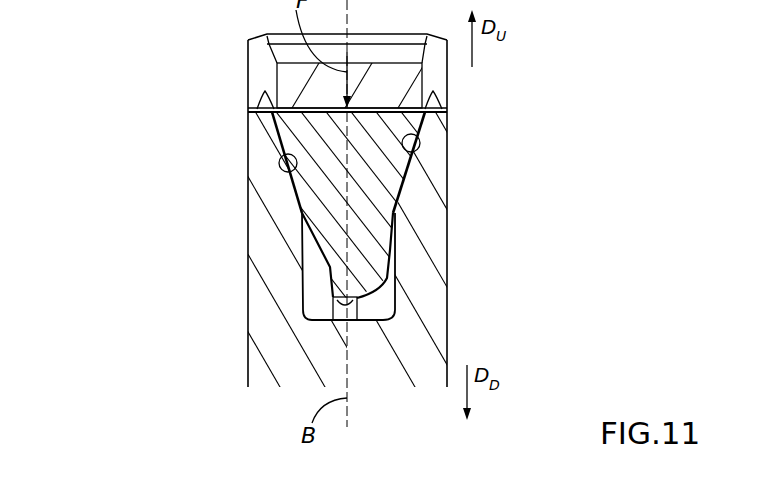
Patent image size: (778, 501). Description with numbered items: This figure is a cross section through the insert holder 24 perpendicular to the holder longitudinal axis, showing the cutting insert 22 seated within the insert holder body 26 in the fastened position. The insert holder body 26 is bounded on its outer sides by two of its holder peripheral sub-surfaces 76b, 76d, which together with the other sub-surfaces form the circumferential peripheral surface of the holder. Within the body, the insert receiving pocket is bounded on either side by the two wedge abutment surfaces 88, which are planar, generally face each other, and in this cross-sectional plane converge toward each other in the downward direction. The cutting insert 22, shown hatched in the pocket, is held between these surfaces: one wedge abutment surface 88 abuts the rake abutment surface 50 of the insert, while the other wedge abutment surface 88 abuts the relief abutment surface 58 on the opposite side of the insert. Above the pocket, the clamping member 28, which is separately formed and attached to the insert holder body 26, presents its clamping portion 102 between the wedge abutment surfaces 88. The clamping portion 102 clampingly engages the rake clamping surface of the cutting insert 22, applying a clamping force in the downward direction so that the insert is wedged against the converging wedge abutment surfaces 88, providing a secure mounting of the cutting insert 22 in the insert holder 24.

The cutting insert 22 is at (380, 203).
The insert holder 24 is at (505, 62).
The insert holder body 26 is at (118, 297).
The clamping member 28 is at (292, 90).
The rake abutment surface 50 is at (298, 199).
The relief abutment surface 58 is at (402, 172).
The holder peripheral sub-surface 76b is at (250, 340).
The holder peripheral sub-surface 76d is at (447, 330).
The wedge abutment surface 88 is at (280, 161).
The clamping portion 102 is at (325, 113).